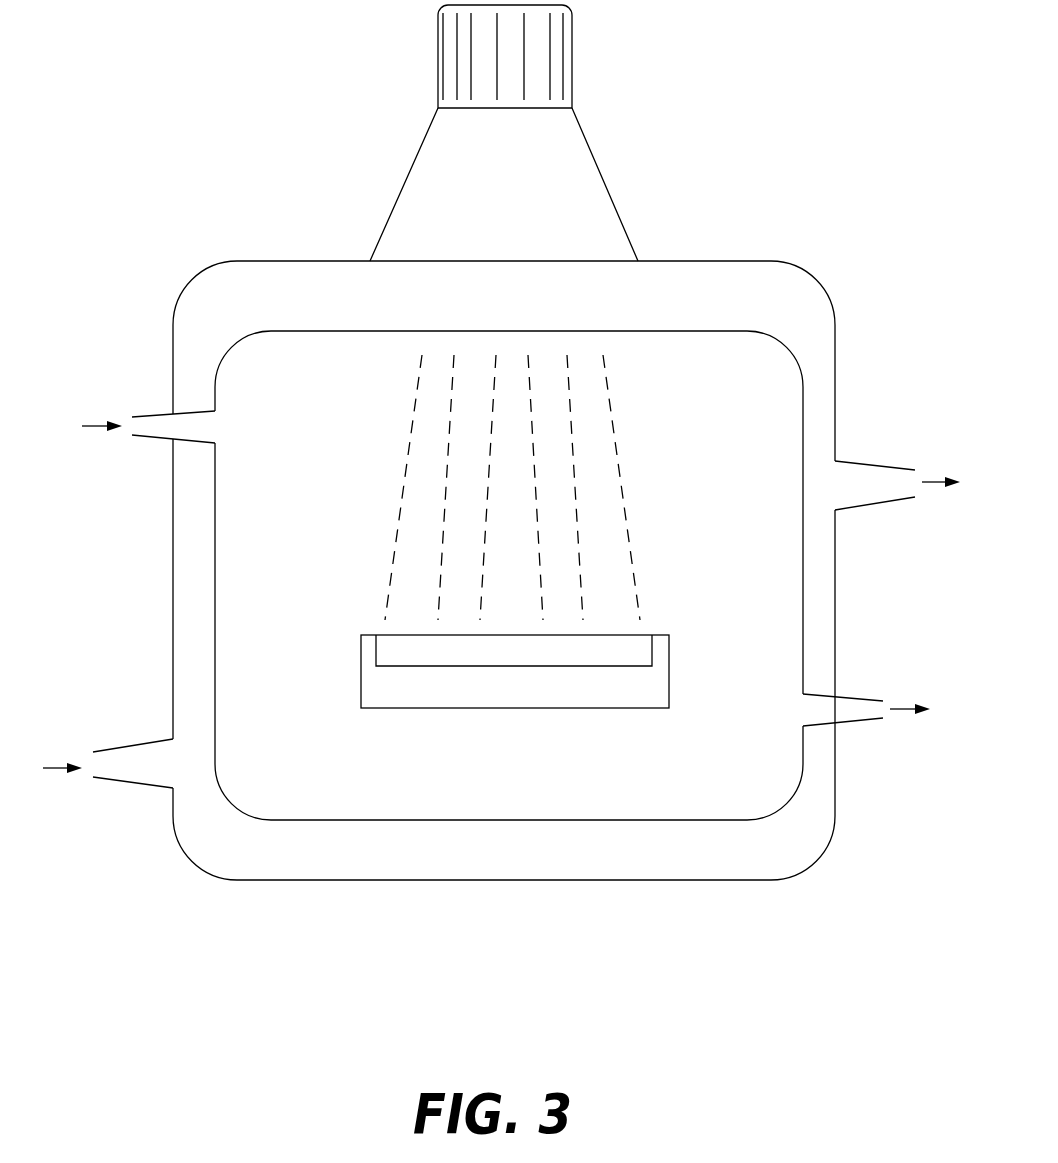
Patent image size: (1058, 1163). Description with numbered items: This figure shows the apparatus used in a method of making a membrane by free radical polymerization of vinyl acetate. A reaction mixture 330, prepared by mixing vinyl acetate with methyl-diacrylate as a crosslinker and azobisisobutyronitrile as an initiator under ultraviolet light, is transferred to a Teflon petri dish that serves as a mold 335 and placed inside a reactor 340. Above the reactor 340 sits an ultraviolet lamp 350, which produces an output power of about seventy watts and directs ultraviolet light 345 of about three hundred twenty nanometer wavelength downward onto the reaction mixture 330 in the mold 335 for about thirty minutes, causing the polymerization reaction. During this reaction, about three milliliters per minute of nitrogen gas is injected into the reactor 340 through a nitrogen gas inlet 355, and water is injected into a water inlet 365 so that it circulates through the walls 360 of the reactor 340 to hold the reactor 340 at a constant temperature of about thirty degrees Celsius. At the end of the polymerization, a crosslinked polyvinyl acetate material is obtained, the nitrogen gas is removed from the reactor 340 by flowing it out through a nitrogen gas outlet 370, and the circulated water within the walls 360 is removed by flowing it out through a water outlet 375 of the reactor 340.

The reactor 340 is at (248, 158).
The walls 360 is at (687, 869).
The nitrogen gas inlet 355 is at (137, 392).
The water inlet 365 is at (115, 808).
The water outlet 375 is at (883, 430).
The nitrogen gas outlet 370 is at (875, 744).
The ultraviolet lamp 350 is at (596, 130).
The ultraviolet light 345 is at (630, 403).
The Teflon petri dish (mold) 335 is at (390, 725).
The reaction mixture 330 is at (388, 640).